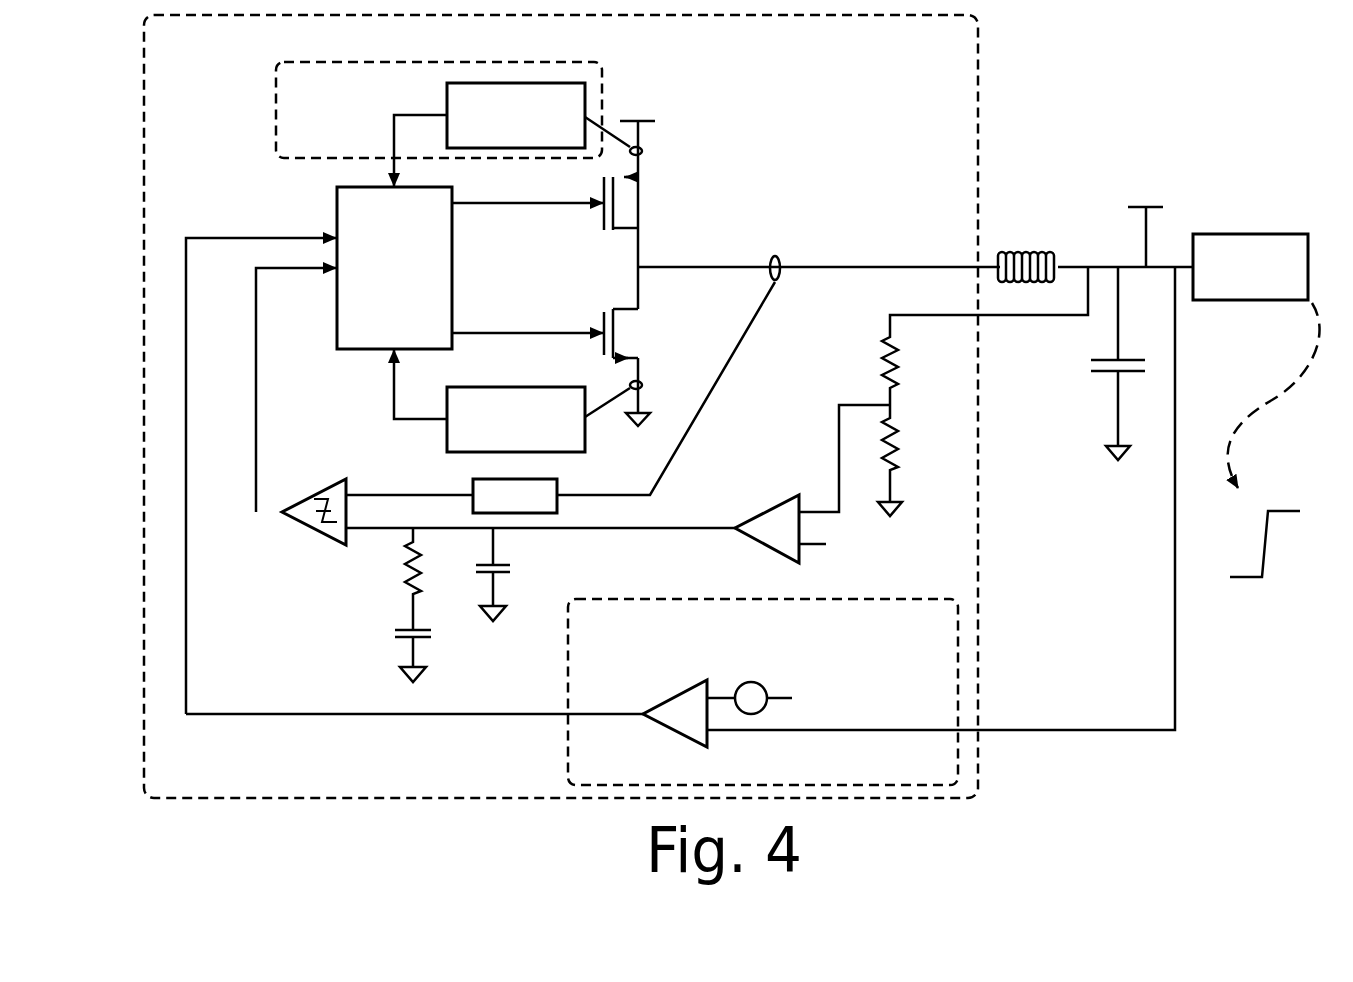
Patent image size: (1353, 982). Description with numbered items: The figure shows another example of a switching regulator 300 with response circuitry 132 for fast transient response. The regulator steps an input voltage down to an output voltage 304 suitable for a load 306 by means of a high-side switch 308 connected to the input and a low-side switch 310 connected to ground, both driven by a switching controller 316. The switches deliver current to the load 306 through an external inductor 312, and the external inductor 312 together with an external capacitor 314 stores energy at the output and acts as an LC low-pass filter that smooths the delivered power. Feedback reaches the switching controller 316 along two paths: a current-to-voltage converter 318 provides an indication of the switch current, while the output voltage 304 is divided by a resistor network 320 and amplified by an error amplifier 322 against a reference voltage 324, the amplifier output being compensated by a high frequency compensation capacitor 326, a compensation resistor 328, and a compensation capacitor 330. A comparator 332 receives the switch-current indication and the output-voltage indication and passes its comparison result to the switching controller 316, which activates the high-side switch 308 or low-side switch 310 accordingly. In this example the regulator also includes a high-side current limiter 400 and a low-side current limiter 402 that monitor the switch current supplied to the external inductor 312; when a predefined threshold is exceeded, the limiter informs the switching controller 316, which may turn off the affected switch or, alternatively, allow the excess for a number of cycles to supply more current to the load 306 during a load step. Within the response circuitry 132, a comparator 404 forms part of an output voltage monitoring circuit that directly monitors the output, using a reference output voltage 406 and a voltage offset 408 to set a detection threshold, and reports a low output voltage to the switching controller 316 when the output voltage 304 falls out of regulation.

The switching regulator 300 is at (561, 406).
The response circuitry 132 is at (617, 423).
The high-side current limiter 400 is at (518, 134).
The low-side current limiter 402 is at (537, 272).
The switching controller 316 is at (394, 450).
The high-side switch 308 is at (654, 166).
The low-side switch 310 is at (604, 298).
The external inductor 312 is at (1028, 250).
The output voltage 304 is at (1160, 224).
The load 306 is at (1258, 444).
The external capacitor 314 is at (1092, 363).
The resistor network 320 is at (943, 391).
The current-to-voltage converter 318 is at (432, 462).
The error amplifier 322 is at (740, 477).
The reference voltage 324 is at (851, 546).
The comparator 332 is at (305, 538).
The compensation resistor 328 is at (378, 579).
The compensation capacitor 330 is at (382, 643).
The high frequency compensation capacitor 326 is at (515, 574).
The comparator 404 is at (640, 660).
The voltage offset 408 is at (750, 668).
The reference output voltage 406 is at (833, 700).